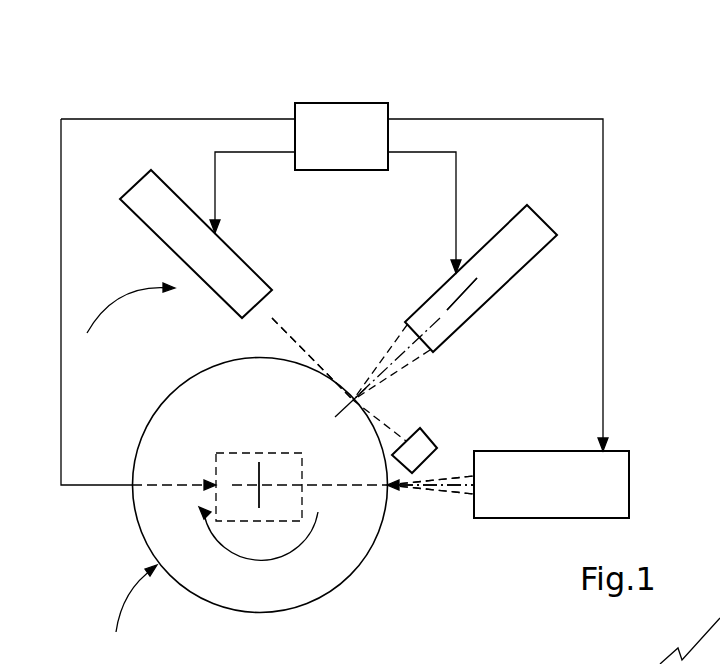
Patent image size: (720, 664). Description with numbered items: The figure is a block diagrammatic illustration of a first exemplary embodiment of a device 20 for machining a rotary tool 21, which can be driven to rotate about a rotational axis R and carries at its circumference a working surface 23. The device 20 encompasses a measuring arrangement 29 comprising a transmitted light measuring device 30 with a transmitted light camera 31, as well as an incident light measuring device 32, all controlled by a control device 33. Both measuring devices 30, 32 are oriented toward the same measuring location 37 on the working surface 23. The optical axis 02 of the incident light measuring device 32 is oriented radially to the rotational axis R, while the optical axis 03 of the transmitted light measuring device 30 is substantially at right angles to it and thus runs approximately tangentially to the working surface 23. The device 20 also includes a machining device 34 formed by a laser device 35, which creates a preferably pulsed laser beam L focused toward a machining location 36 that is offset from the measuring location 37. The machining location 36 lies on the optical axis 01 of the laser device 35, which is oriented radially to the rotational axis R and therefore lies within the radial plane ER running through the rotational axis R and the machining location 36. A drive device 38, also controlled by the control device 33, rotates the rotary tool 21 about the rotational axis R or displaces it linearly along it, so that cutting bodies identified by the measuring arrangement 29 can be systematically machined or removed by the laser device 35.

The device 20 is at (616, 138).
The rotary tool 21 is at (330, 572).
The working surface 23 is at (212, 581).
The measuring arrangement 29 is at (126, 321).
The transmitted light measuring device 30 is at (243, 283).
The transmitted light camera 31 is at (422, 443).
The incident light measuring device 32 is at (530, 229).
The control device 33 is at (354, 148).
The machining device 34 is at (539, 499).
The laser device 35 is at (582, 499).
The machining location 36 is at (390, 487).
The measuring location 37 is at (353, 400).
The drive device 38 is at (236, 452).
The rotational axis R is at (262, 482).
The radial plane ER is at (332, 487).
The laser beam L is at (447, 477).
The optical axis of the laser device 01 is at (478, 490).
The optical axis of the incident light measuring device 02 is at (455, 297).
The optical axis of the transmitted light measuring device 03 is at (273, 318).